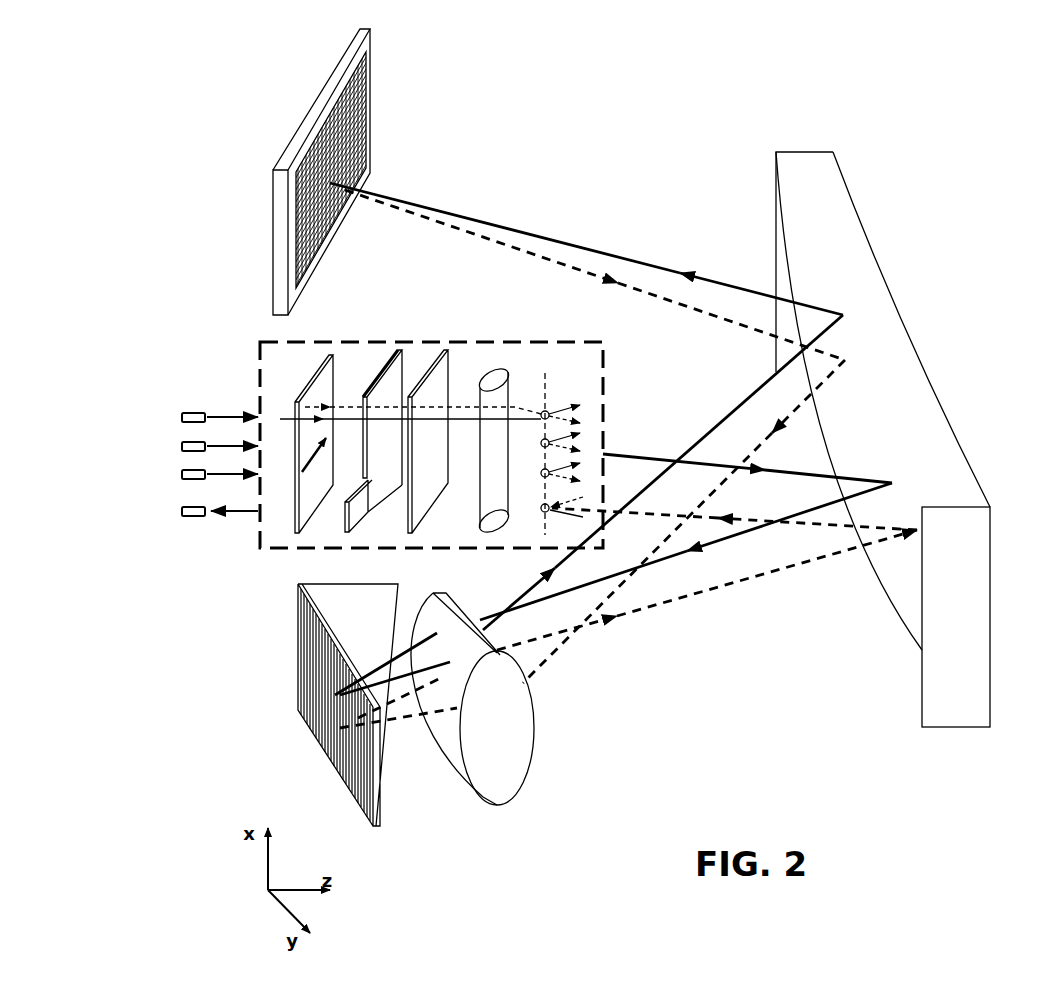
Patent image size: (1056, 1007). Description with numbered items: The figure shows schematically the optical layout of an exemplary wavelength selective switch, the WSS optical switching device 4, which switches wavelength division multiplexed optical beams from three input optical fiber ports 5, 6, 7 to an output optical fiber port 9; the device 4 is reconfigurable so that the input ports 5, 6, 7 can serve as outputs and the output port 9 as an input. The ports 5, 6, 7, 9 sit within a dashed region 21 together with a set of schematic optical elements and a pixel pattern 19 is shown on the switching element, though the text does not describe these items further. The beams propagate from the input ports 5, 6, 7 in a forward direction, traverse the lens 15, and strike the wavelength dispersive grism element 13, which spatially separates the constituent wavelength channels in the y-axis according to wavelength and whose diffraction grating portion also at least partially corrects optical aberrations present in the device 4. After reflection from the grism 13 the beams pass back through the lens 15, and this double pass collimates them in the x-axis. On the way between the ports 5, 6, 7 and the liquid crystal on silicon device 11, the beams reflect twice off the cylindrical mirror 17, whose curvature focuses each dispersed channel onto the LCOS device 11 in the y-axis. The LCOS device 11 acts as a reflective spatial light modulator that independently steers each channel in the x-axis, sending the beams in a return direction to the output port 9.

The WSS optical switching device 4 is at (606, 158).
The input optical fiber port 5 is at (193, 412).
The input optical fiber port 6 is at (193, 441).
The input optical fiber port 7 is at (193, 469).
The output optical fiber port 9 is at (193, 506).
The liquid crystal on silicon (LCOS) device 11 is at (307, 227).
The wavelength dispersive grism element 13 is at (297, 708).
The lens 15 is at (490, 786).
The cylindrical mirror 17 is at (914, 372).
The pixel array 19 is at (323, 247).
The light source module 21 is at (472, 342).